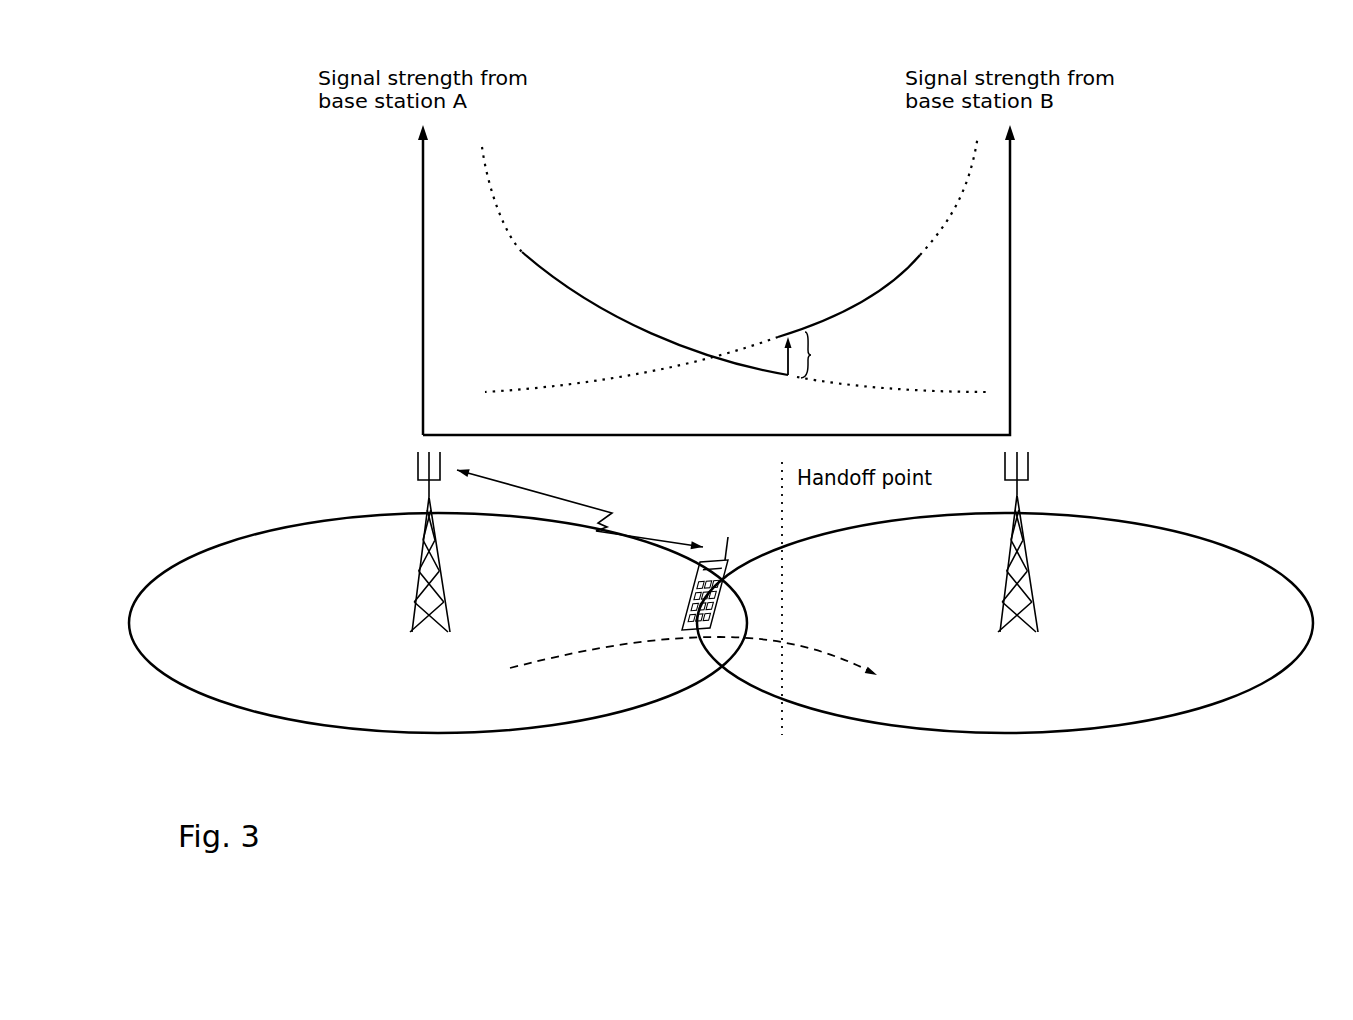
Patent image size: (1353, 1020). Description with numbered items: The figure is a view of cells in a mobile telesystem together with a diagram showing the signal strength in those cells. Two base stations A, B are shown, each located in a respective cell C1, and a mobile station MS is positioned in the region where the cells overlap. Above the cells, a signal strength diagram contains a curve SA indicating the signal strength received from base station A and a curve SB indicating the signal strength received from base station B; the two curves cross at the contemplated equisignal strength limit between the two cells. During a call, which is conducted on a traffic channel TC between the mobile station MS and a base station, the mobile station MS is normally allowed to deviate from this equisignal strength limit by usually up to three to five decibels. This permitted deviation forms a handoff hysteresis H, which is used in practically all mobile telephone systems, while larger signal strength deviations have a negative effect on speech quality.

The curve SA is at (563, 280).
The curve SB is at (862, 300).
The handoff hysteresis H is at (811, 355).
The traffic channel TC is at (598, 503).
The base station A is at (430, 632).
The base station B is at (1022, 633).
The mobile station MS is at (700, 628).
The cell C1 is at (1165, 547).